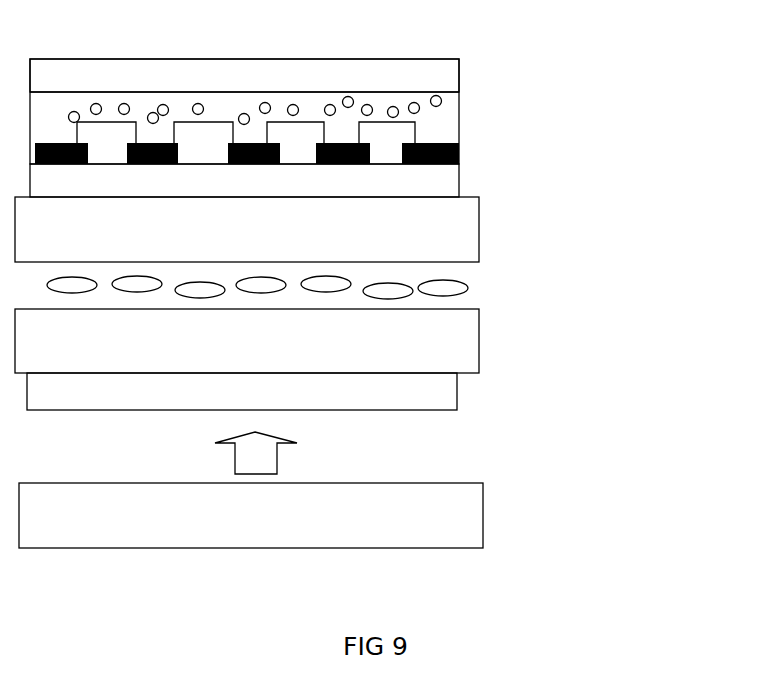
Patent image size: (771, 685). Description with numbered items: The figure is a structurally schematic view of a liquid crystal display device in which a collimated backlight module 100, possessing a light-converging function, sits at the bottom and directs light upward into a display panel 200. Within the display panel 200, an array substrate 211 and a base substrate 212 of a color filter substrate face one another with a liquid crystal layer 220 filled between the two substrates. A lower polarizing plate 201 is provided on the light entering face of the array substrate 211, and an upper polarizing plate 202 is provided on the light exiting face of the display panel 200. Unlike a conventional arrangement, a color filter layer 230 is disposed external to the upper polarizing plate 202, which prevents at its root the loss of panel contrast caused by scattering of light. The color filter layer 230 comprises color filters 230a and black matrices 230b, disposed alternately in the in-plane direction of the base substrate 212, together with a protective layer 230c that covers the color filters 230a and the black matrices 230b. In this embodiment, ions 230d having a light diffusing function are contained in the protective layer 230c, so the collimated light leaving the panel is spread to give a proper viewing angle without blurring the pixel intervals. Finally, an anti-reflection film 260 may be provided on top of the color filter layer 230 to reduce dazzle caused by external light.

The backlight module 100 is at (484, 502).
The display panel 200 is at (684, 13).
The lower polarizing plate 201 is at (462, 392).
The upper polarizing plate 202 is at (460, 182).
The array substrate 211 is at (482, 337).
The base substrate of a color filter substrate 212 is at (482, 240).
The liquid crystal layer 220 is at (470, 287).
The color filter layer 230 is at (614, 47).
The color filters 230a is at (407, 140).
The black matrices 230b is at (460, 162).
The protective layer 230c is at (440, 114).
The ions having a light diffusing function 230d is at (420, 92).
The anti-reflection film 260 is at (455, 62).